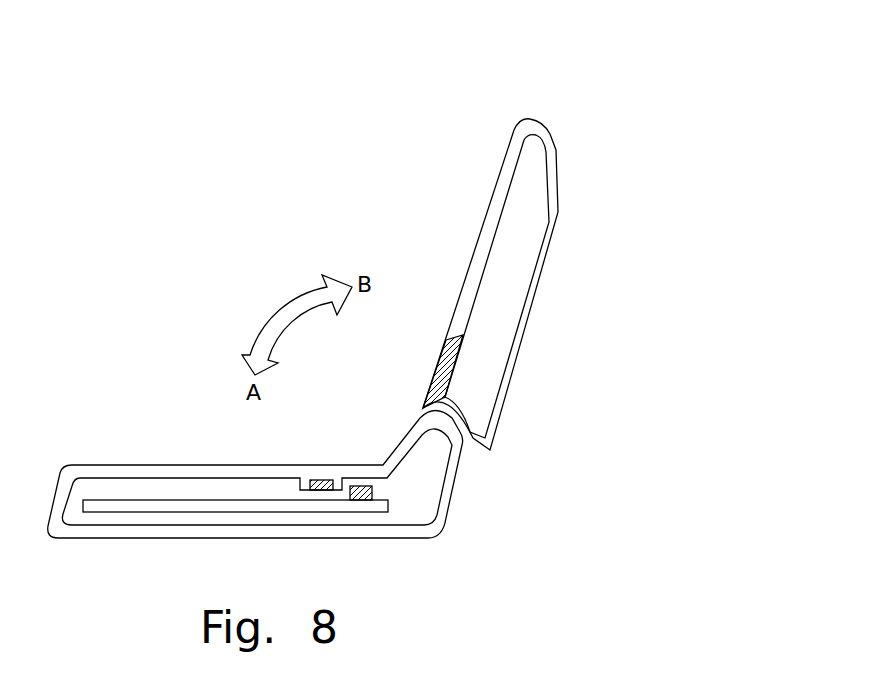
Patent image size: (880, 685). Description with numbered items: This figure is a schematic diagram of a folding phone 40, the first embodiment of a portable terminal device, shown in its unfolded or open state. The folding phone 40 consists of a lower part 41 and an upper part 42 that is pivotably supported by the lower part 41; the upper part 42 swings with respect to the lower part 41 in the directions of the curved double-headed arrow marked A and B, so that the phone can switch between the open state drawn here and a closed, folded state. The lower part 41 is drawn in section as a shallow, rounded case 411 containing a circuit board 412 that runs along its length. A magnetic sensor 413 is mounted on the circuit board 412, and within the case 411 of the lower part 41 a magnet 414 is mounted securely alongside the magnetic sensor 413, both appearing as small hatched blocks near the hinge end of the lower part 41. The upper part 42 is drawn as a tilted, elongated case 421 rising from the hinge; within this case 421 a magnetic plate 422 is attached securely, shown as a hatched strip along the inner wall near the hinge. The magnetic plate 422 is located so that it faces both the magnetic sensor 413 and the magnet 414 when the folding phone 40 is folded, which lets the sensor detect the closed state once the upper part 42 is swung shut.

The folding phone 40 is at (600, 80).
The lower part 41 is at (80, 420).
The upper part 42 is at (478, 120).
The case 411 is at (133, 465).
The circuit board 412 is at (203, 500).
The magnetic sensor 413 is at (361, 486).
The magnet 414 is at (310, 493).
The case 421 is at (498, 182).
The magnetic plate 422 is at (455, 356).